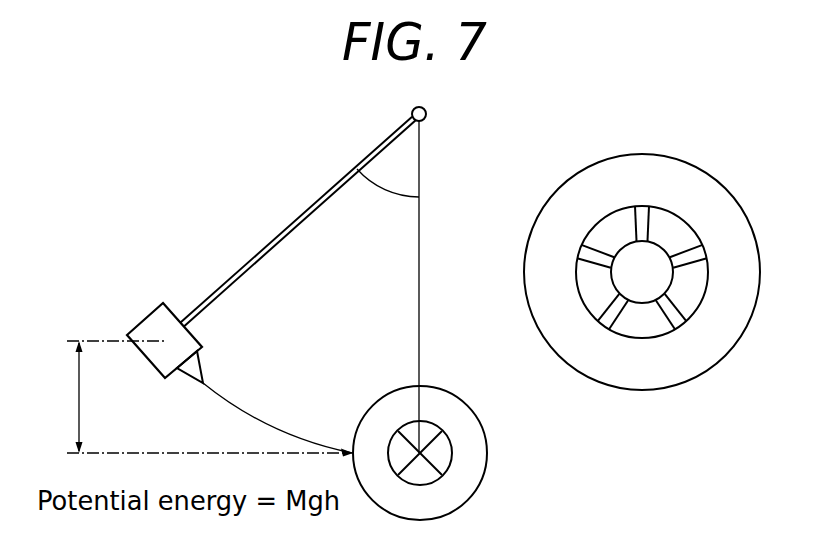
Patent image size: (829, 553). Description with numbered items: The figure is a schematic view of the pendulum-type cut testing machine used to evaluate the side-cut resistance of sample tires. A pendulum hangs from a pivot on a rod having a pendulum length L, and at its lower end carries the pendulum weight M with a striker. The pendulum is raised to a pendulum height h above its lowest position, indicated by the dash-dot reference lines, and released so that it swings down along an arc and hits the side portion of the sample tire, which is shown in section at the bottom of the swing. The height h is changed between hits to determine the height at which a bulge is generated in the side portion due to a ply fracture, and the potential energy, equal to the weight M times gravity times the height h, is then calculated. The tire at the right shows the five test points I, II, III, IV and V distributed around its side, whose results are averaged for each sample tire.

The pendulum length L is at (412, 116).
The pendulum weight M is at (148, 311).
The pendulum height h is at (208, 397).
The test point I is at (642, 181).
The test point II is at (558, 243).
The test point III is at (590, 346).
The test point IV is at (693, 346).
The test point V is at (726, 244).